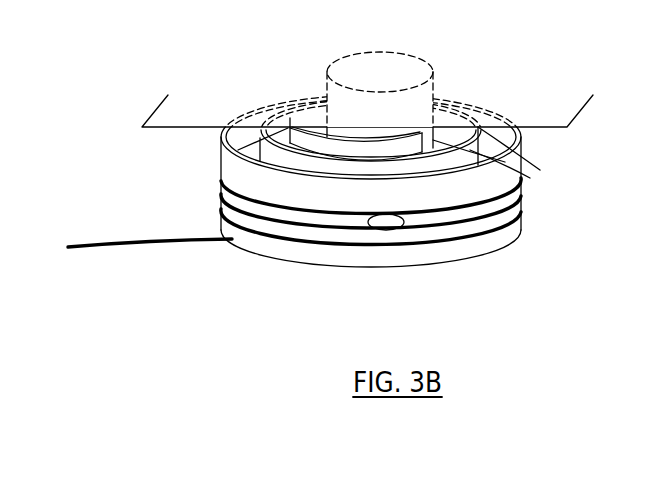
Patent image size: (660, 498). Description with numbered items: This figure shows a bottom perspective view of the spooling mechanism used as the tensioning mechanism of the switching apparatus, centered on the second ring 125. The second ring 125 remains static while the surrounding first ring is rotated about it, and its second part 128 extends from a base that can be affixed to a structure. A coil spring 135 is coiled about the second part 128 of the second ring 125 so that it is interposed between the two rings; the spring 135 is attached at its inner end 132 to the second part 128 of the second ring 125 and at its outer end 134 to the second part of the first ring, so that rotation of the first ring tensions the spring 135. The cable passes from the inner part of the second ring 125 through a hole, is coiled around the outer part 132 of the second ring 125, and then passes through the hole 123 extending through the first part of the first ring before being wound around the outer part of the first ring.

The hole 123 is at (382, 230).
The second ring 125 is at (436, 88).
The second part of the second ring 128 is at (254, 246).
The inner end of the spring 132 is at (485, 137).
The outer end of the spring 134 is at (296, 104).
The coil spring 135 is at (478, 123).